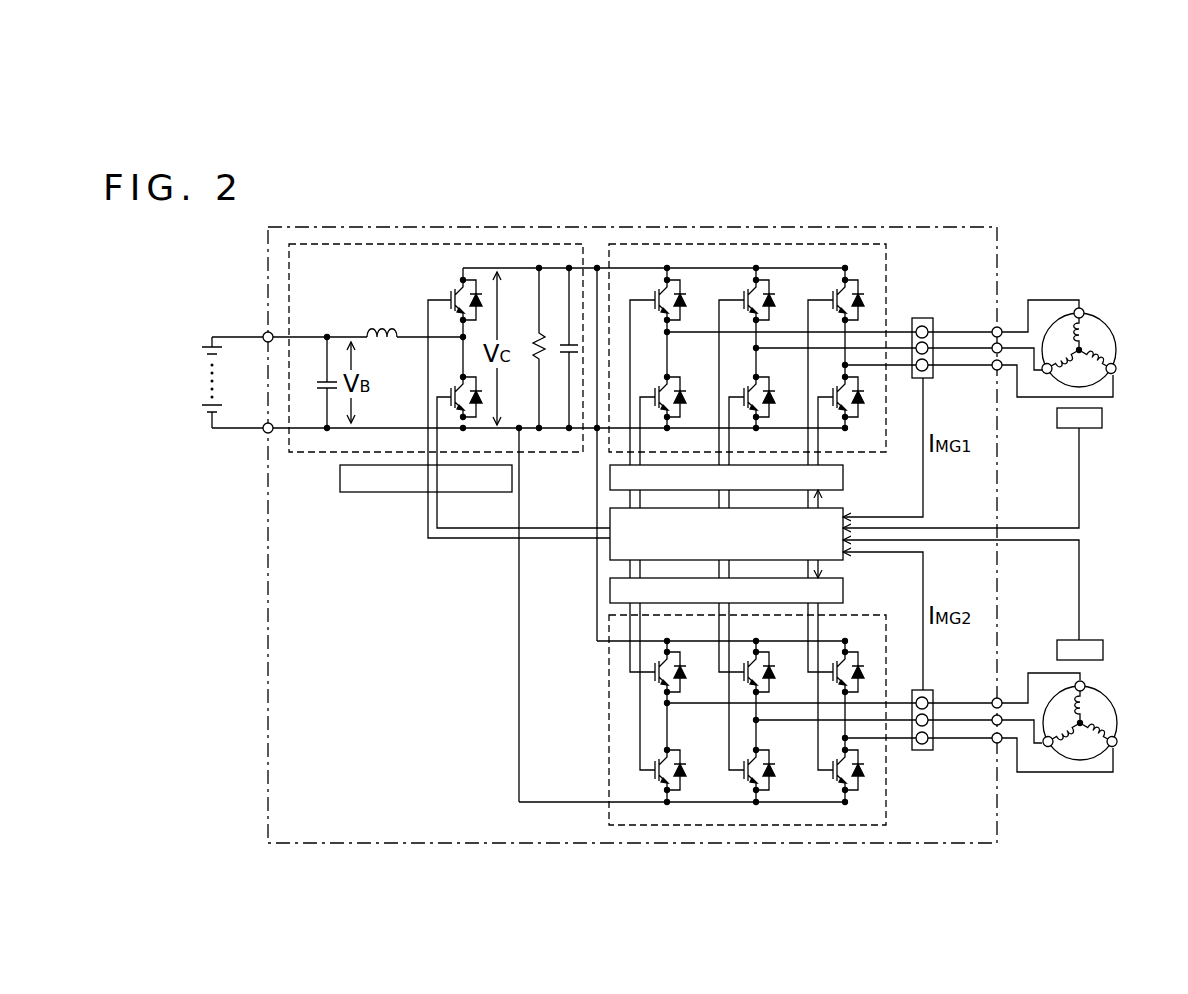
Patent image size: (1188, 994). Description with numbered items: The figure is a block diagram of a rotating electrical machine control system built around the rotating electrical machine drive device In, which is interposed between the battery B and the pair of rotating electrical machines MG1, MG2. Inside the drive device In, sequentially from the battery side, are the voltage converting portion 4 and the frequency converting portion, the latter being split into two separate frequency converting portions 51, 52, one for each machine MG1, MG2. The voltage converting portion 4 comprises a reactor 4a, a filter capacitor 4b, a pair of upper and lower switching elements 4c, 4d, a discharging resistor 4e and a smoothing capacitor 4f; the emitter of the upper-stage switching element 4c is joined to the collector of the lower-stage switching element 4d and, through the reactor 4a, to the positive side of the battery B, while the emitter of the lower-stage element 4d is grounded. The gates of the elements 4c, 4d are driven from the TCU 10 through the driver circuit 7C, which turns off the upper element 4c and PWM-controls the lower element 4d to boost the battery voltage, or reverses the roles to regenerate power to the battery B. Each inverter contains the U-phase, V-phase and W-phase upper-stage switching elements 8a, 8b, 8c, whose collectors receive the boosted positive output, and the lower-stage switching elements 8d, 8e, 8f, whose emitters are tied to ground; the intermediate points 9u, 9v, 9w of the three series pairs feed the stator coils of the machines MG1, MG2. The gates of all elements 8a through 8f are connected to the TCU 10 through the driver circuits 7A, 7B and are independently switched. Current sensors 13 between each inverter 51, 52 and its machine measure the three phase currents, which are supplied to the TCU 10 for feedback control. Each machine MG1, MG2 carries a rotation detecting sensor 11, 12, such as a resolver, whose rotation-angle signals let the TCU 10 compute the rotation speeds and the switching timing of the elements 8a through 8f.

The battery B is at (200, 382).
The rotating electrical machine drive device In is at (268, 648).
The voltage converting portion 4 is at (327, 453).
The reactor 4a is at (372, 333).
The filter capacitor 4b is at (325, 380).
The upper-stage switching element 4c is at (443, 290).
The lower-stage switching element 4d is at (442, 388).
The discharging resistor 4e is at (538, 333).
The smoothing capacitor 4f is at (567, 362).
The driver circuit 7A is at (843, 478).
The driver circuit 7B is at (843, 590).
The driver circuit 7C is at (395, 494).
The U-phase upper-stage switching element 8a is at (647, 288).
The V-phase upper-stage switching element 8b is at (737, 288).
The W-phase upper-stage switching element 8c is at (823, 288).
The U-phase lower-stage switching element 8d is at (651, 420).
The V-phase lower-stage switching element 8e is at (741, 420).
The W-phase lower-stage switching element 8f is at (829, 420).
The intermediate point 9u is at (663, 334).
The intermediate point 9v is at (754, 350).
The intermediate point 9w is at (843, 366).
The TCU 10 is at (609, 553).
The rotation detecting sensor 11 is at (1082, 432).
The rotation detecting sensor 12 is at (1092, 640).
The current sensor 13 is at (933, 320).
The frequency converting portion 51 is at (888, 288).
The frequency converting portion 52 is at (897, 770).
The rotating electrical machine MG1 is at (1108, 338).
The rotating electrical machine MG2 is at (1108, 706).